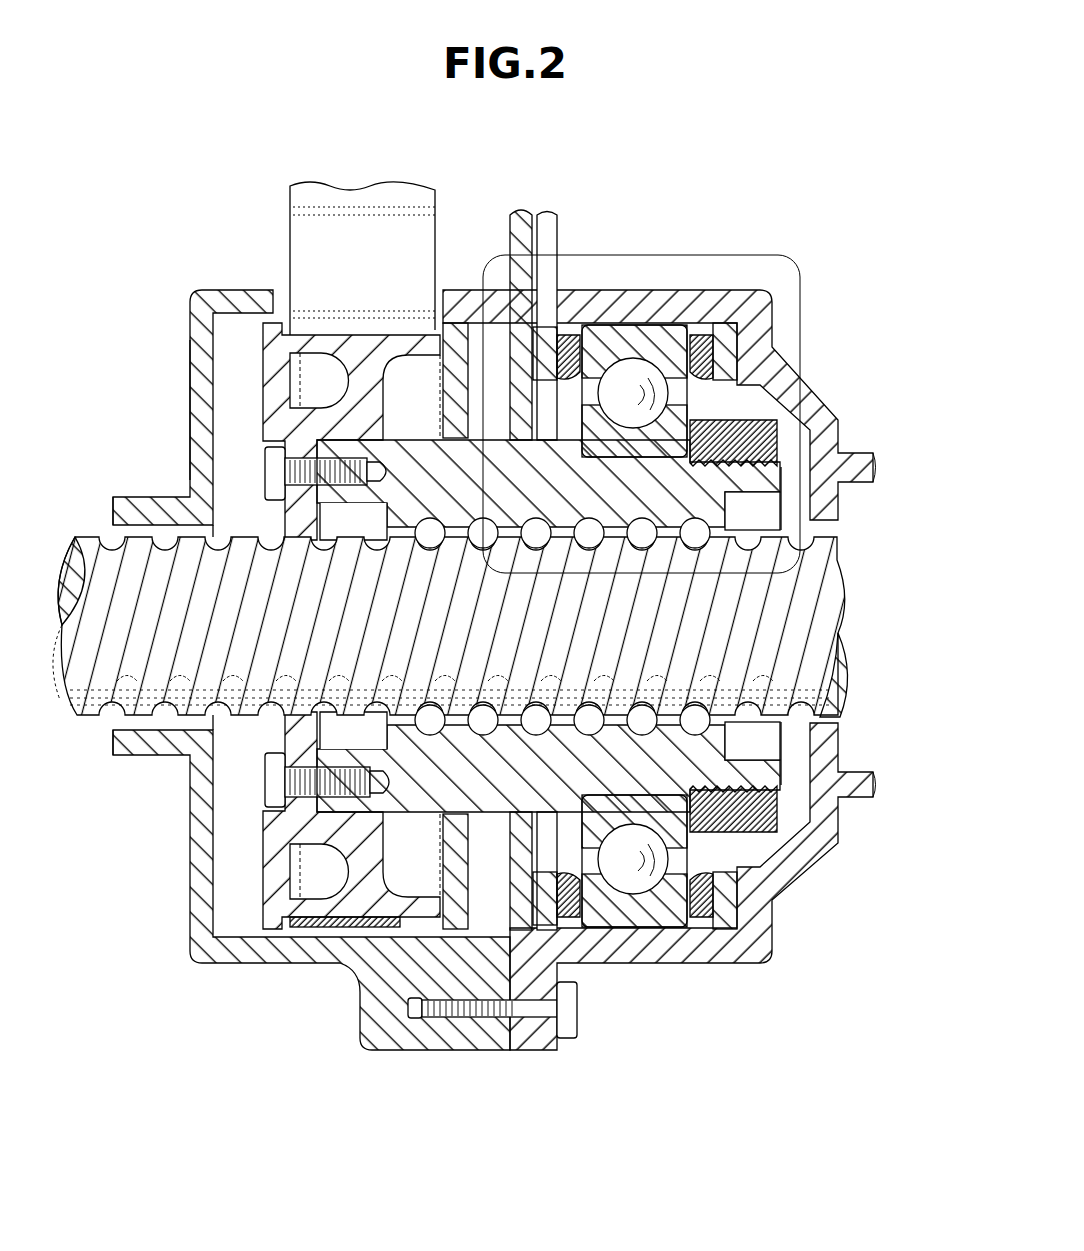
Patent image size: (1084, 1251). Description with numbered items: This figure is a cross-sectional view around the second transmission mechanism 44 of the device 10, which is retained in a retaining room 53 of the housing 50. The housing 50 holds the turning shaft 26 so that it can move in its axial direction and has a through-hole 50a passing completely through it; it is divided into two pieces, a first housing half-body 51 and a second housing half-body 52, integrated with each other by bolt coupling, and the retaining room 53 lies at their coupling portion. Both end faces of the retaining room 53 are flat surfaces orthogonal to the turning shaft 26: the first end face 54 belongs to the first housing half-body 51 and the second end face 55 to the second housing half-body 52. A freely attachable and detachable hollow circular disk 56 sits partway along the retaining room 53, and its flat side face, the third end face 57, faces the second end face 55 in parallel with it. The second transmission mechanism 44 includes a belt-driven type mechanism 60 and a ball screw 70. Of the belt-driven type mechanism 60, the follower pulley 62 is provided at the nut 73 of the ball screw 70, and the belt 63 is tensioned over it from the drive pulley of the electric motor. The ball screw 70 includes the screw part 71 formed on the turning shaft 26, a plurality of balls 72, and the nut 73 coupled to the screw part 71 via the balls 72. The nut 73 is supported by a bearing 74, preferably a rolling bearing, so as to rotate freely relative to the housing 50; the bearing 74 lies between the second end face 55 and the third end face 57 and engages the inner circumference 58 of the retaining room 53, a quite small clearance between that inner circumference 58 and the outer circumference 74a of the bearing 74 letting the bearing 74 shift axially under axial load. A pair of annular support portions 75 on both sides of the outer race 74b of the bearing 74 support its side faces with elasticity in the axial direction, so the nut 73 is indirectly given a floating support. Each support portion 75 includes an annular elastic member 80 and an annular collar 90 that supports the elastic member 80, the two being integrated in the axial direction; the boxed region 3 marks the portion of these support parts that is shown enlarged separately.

The ball screw device 10 is at (692, 104).
The enlarged region 3 is at (793, 262).
The turning shaft 26 is at (72, 660).
The second transmission mechanism 44 is at (228, 247).
The housing 50 is at (507, 702).
The through-hole 50a is at (152, 722).
The first housing half-body 51 is at (282, 965).
The second housing half-body 52 is at (671, 672).
The retaining room 53 is at (760, 396).
The first wall surface 54 is at (190, 428).
The second wall surface 55 is at (736, 350).
The hollow circular disk 56 is at (522, 358).
The third end face 57 is at (546, 398).
The inner circumference 58 is at (628, 332).
The belt-driven type mechanism 60 is at (327, 238).
The follower pulley 62 is at (341, 345).
The belt 63 is at (382, 212).
The ball screw 70 is at (505, 626).
The screw part 71 is at (720, 600).
The balls 72 is at (700, 658).
The nut 73 is at (700, 716).
The bearing 74 is at (643, 549).
The outer circumference 74a is at (600, 352).
The outer race 74b is at (668, 345).
The annular support portion 75 is at (636, 529).
The elastic member 80 is at (568, 352).
The collar 90 is at (545, 355).